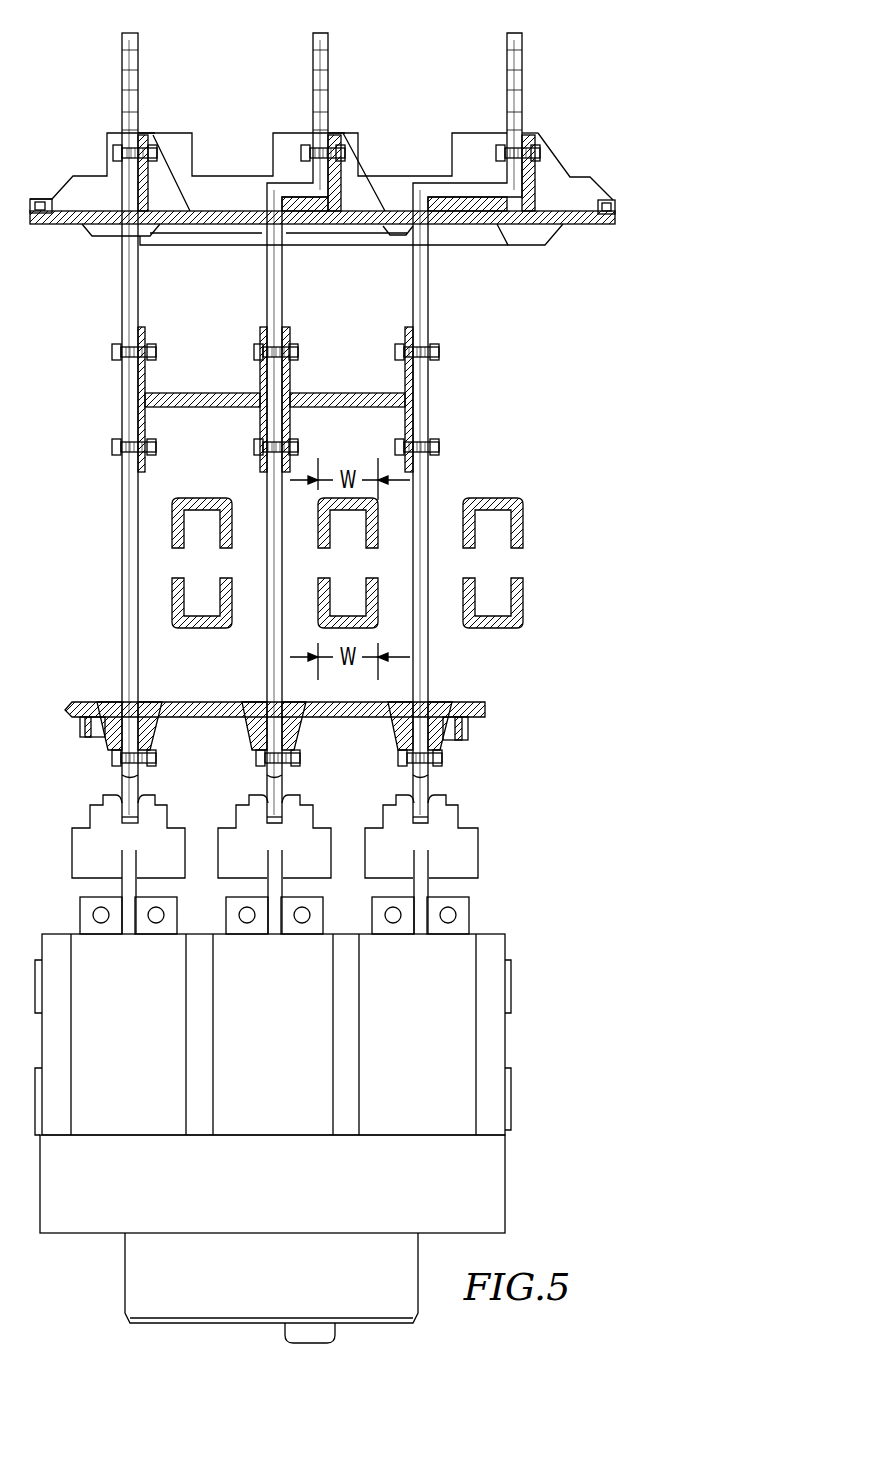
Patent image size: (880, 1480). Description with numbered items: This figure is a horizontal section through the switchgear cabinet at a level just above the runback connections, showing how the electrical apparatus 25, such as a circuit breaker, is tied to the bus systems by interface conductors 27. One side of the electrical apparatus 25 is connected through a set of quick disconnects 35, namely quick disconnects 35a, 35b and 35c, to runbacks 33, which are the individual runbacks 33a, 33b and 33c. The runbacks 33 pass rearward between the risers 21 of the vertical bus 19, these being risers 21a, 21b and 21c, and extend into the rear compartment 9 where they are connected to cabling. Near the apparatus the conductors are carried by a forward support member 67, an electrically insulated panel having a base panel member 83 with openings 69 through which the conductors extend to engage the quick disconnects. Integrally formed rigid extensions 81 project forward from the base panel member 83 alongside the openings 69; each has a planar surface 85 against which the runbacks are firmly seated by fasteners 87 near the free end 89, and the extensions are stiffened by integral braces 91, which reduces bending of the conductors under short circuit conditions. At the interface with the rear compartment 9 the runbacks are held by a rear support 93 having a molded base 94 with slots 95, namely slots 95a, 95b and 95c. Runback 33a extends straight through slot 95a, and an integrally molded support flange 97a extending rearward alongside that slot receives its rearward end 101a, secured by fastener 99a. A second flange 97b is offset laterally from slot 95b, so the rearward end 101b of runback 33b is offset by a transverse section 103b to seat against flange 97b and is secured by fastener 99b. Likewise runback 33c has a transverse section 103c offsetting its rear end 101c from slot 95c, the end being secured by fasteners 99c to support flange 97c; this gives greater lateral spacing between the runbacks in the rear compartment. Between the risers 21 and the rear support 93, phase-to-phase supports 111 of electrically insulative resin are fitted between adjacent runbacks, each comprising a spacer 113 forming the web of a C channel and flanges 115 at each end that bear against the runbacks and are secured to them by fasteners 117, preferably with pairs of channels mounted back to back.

The rear compartment 9 is at (598, 63).
The vertical bus 19 is at (545, 392).
The risers 21 is at (540, 507).
The riser 21a is at (190, 497).
The riser 21b is at (336, 493).
The riser 21c is at (528, 497).
The electrical apparatus 25 is at (495, 1172).
The interface conductors 27 is at (88, 630).
The runbacks 33 is at (457, 636).
The runback 33a is at (122, 549).
The runback 33b is at (267, 585).
The runback 33c is at (413, 585).
The quick disconnects 35 is at (297, 864).
The quick disconnect 35a is at (75, 848).
The quick disconnect 35b is at (220, 848).
The quick disconnect 35c is at (365, 848).
The forward support member 67 is at (487, 712).
The openings 69 is at (130, 706).
The rigid extensions 81 is at (150, 740).
The base panel member 83 is at (300, 708).
The planar surfaces 85 is at (440, 745).
The fasteners 87 is at (112, 758).
The free end 89 is at (140, 778).
The integral braces 91 is at (180, 745).
The rear support 93 is at (622, 186).
The molded base 94 is at (505, 226).
The slots 95 is at (630, 210).
The slot 95a is at (100, 211).
The slot 95b is at (255, 211).
The slot 95c is at (383, 211).
The support flange 97a is at (142, 180).
The support flange 97b is at (340, 180).
The support flange 97c is at (540, 185).
The fastener 99a is at (116, 146).
The fastener 99b is at (304, 148).
The fastener 99c is at (540, 148).
The rearward end 101a is at (138, 34).
The rearward end 101b is at (328, 34).
The rear end 101c is at (522, 34).
The transverse section 103b is at (300, 178).
The transverse section 103c is at (458, 190).
The phase-to-phase supports 111 is at (190, 352).
The spacer 113 is at (236, 393).
The flanges 115 is at (145, 330).
The fasteners 117 is at (113, 348).